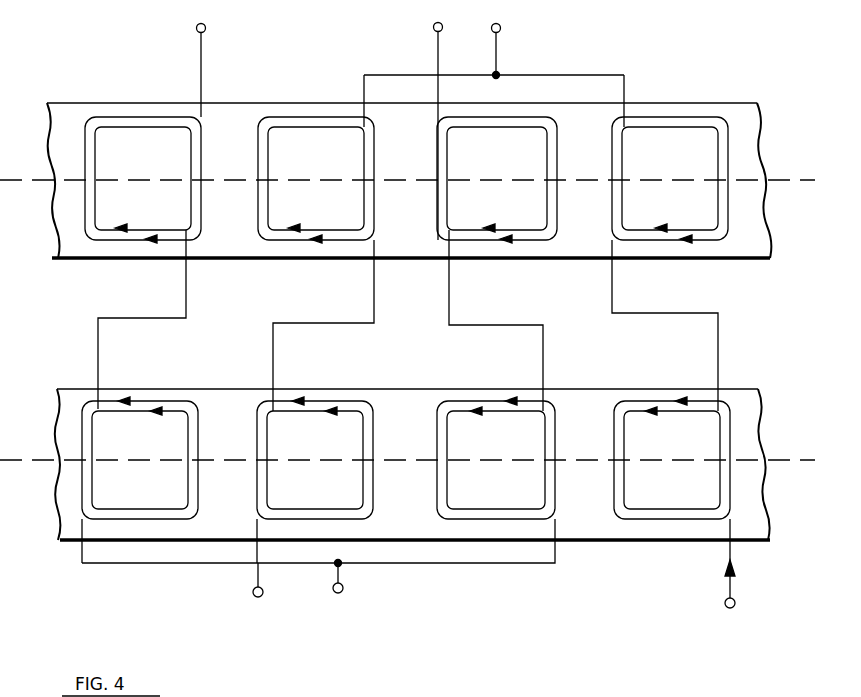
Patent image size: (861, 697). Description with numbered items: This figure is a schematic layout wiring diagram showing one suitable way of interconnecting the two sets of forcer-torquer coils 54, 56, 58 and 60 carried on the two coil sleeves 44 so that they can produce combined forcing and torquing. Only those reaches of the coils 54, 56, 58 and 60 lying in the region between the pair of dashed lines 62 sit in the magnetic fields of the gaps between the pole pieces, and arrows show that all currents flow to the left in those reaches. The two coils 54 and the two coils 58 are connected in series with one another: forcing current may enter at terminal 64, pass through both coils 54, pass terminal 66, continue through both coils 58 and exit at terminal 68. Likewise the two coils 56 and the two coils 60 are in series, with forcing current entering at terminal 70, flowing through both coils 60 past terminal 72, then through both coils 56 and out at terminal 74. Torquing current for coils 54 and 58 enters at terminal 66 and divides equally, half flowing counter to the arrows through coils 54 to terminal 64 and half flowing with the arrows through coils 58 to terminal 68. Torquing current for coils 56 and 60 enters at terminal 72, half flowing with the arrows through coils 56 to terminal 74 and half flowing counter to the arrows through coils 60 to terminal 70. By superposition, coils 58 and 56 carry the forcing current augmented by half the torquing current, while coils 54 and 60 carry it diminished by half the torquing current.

The coil sleeve 44 is at (755, 248).
The coil 54 is at (672, 122).
The coil 56 is at (528, 120).
The coil 58 is at (305, 120).
The coil 60 is at (125, 120).
The dashed line 62 is at (782, 181).
The terminal 64 is at (735, 603).
The terminal 66 is at (501, 30).
The terminal 68 is at (255, 598).
The terminal 70 is at (206, 27).
The terminal 72 is at (342, 592).
The terminal 74 is at (433, 26).